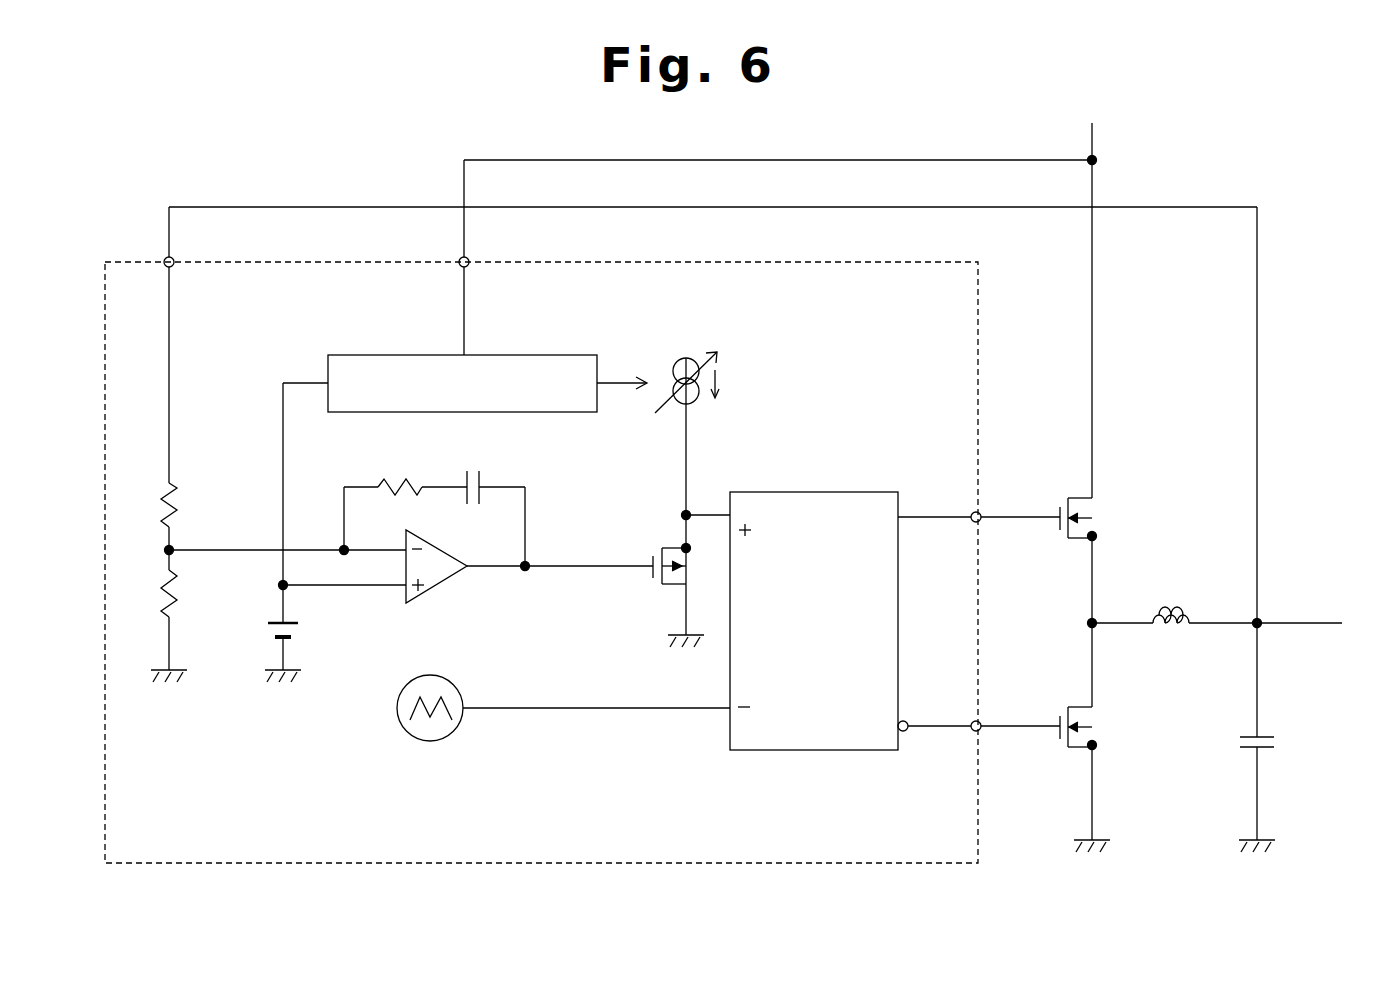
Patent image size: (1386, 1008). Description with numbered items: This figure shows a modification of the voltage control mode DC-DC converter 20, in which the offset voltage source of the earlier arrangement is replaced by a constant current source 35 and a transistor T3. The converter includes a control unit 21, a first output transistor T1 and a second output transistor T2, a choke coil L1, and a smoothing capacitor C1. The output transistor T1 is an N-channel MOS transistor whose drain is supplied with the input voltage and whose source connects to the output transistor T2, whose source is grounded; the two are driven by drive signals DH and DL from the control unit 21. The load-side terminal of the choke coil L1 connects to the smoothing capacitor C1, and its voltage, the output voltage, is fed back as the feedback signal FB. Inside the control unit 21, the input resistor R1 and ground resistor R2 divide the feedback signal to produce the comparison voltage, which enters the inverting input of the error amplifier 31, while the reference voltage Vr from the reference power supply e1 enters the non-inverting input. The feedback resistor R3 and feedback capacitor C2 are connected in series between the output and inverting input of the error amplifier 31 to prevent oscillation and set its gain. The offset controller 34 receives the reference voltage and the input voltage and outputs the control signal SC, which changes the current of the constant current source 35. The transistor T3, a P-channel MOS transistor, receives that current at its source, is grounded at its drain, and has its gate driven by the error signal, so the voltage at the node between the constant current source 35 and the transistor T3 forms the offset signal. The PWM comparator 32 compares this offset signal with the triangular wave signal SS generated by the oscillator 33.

The DC-DC converter 20 is at (1313, 178).
The control unit 21 is at (979, 303).
The error amplifier 31 is at (443, 547).
The PWM comparator 32 is at (872, 492).
The oscillator 33 is at (430, 675).
The offset controller 34 is at (557, 355).
The constant current source 35 is at (675, 358).
The input resistor R1 is at (176, 495).
The ground resistor R2 is at (176, 583).
The feedback resistor R3 is at (391, 480).
The feedback capacitor C2 is at (480, 480).
The smoothing capacitor C1 is at (1242, 737).
The choke coil L1 is at (1168, 611).
The first output transistor T1 is at (1085, 510).
The second output transistor T2 is at (1085, 719).
The transistor T3 is at (651, 570).
The reference power supply e1 is at (293, 637).